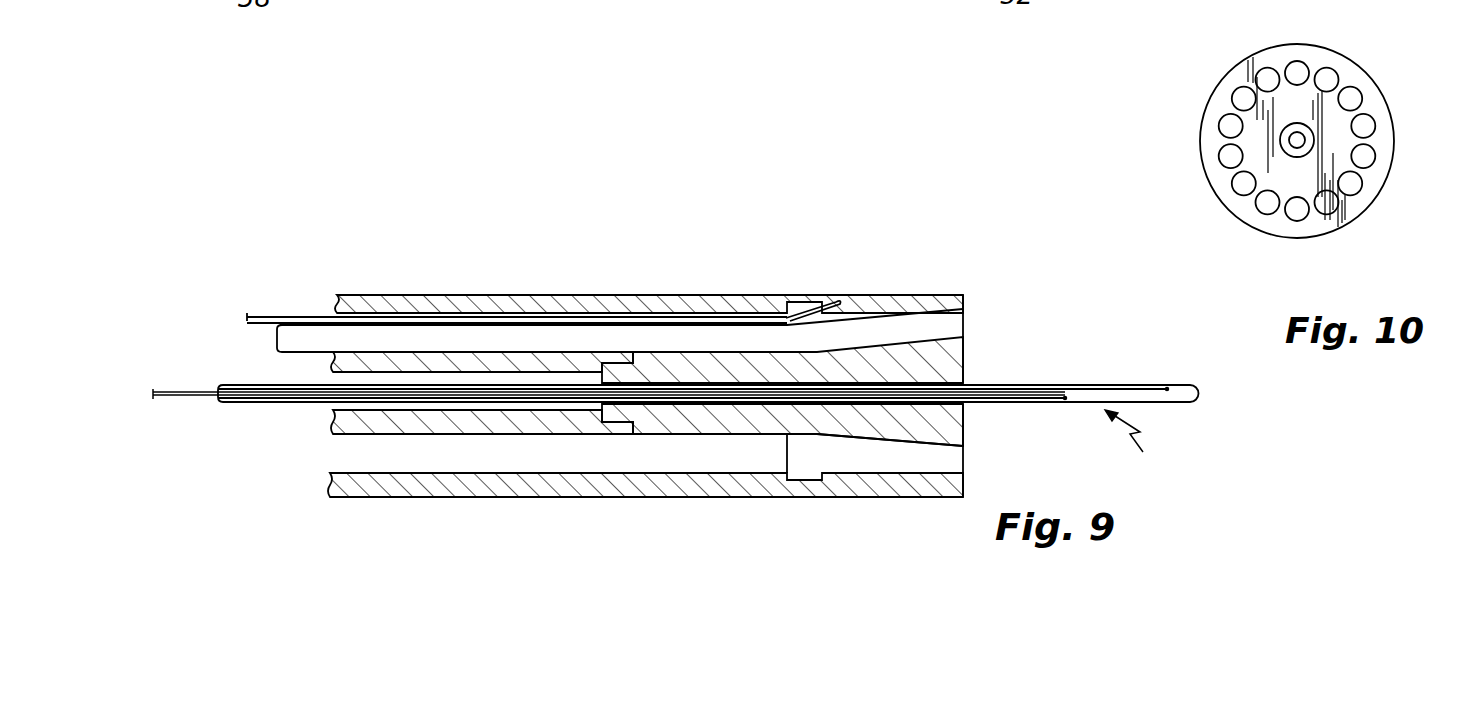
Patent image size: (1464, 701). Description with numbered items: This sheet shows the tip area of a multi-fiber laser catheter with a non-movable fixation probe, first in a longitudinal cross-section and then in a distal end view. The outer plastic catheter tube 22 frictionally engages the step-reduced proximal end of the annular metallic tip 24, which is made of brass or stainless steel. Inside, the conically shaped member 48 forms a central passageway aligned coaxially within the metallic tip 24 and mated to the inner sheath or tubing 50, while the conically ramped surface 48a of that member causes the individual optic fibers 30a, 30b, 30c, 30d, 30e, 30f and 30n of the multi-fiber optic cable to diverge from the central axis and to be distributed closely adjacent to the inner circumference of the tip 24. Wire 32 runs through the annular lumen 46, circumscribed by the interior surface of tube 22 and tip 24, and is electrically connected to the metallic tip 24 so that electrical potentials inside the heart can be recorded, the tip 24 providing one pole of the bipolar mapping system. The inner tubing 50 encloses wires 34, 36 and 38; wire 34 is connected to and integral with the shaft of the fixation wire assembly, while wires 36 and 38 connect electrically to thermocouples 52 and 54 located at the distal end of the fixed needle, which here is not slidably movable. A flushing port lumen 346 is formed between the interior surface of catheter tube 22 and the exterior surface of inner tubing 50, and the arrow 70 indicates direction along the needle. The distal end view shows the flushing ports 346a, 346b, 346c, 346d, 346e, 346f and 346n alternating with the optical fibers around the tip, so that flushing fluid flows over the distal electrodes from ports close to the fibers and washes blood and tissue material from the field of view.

In FIG. 9, the plastic catheter tube 22 is at (697, 302).
In FIG. 9, the annular metallic tip 24 is at (883, 293).
In FIG. 9, the optic fiber 30a is at (618, 332).
In FIG. 10, the optic fiber 30a is at (1302, 62).
In FIG. 9, the wire 32 is at (282, 317).
In FIG. 9, the wire 34 is at (248, 403).
In FIG. 9, the wire 36 is at (192, 386).
In FIG. 9, the wire 38 is at (175, 398).
In FIG. 9, the annular lumen 46 is at (495, 323).
In FIG. 9, the conically shaped member 48 is at (951, 352).
In FIG. 9, the conically ramped surface 48a is at (935, 448).
In FIG. 9, the inner sheath or tubing 50 is at (573, 358).
In FIG. 9, the thermocouple 52 is at (1167, 391).
In FIG. 9, the thermocouple 54 is at (1065, 400).
In FIG. 9, the direction arrow 70 is at (1142, 445).
In FIG. 9, the flushing port lumen 346 is at (657, 457).
In FIG. 10, the flushing port 346a is at (1338, 78).
In FIG. 10, the flushing port 346b is at (1270, 68).
In FIG. 10, the flushing port 346c is at (1226, 116).
In FIG. 10, the flushing port 346d is at (1236, 188).
In FIG. 10, the flushing port 346e is at (1300, 214).
In FIG. 10, the flushing port 346f is at (1358, 183).
In FIG. 10, the flushing port 346n is at (1375, 127).
In FIG. 10, the optic fiber 30b is at (1242, 87).
In FIG. 10, the optic fiber 30c is at (1221, 155).
In FIG. 10, the optic fiber 30d is at (1266, 214).
In FIG. 10, the optic fiber 30e is at (1331, 203).
In FIG. 10, the optic fiber 30f is at (1375, 157).
In FIG. 10, the optic fiber 30n is at (1360, 93).